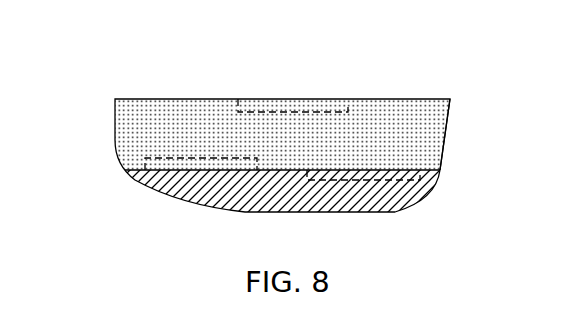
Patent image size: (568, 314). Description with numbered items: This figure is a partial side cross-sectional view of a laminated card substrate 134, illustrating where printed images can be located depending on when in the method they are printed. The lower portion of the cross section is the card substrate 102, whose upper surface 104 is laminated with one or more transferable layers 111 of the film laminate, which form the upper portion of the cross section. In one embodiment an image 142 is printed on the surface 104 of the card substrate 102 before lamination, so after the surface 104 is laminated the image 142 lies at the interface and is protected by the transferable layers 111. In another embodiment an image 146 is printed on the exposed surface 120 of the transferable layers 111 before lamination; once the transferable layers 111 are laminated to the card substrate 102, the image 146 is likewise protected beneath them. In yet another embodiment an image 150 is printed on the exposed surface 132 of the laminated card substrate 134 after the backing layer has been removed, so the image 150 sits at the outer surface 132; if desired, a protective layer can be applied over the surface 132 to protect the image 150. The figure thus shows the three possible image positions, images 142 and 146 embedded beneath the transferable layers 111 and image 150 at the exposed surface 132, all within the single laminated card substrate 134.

The card substrate 102 is at (137, 181).
The surface of card substrate 104 is at (392, 170).
The transferable layers 111 is at (443, 125).
The exposed surface of transferable layers 120 is at (168, 171).
The exposed surface of laminated card substrate 132 is at (163, 99).
The laminated card substrate 134 is at (473, 64).
The image printed on card substrate surface 142 is at (420, 180).
The image printed on transferable layers 146 is at (148, 158).
The image printed on laminated card substrate 150 is at (280, 108).